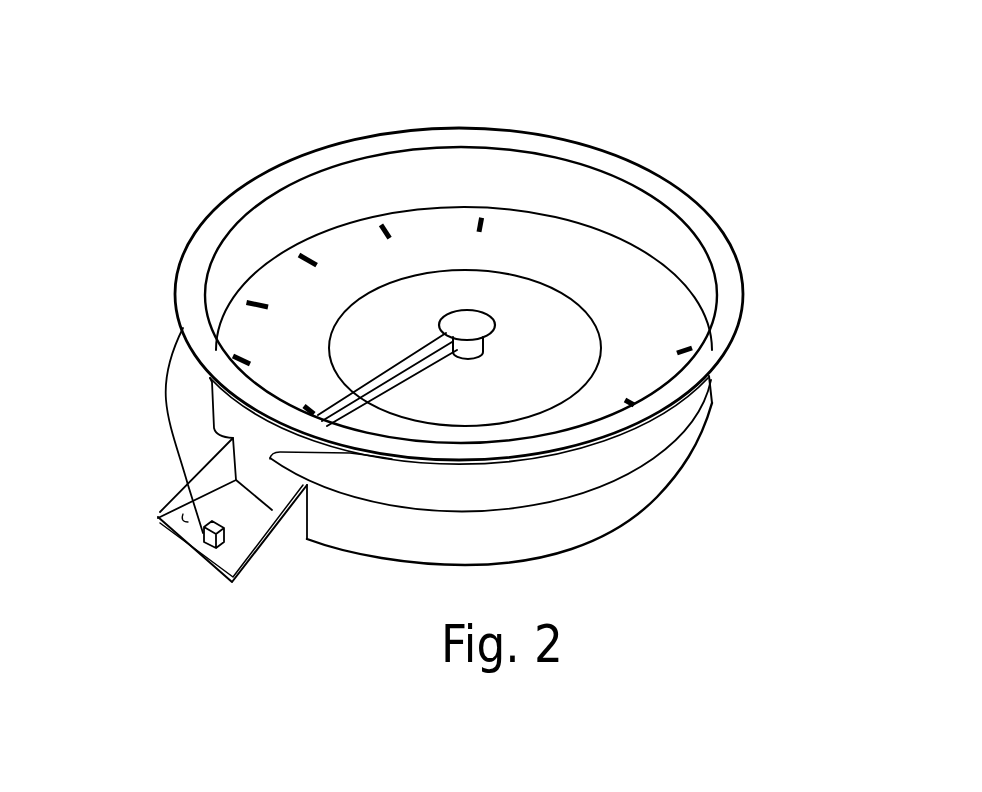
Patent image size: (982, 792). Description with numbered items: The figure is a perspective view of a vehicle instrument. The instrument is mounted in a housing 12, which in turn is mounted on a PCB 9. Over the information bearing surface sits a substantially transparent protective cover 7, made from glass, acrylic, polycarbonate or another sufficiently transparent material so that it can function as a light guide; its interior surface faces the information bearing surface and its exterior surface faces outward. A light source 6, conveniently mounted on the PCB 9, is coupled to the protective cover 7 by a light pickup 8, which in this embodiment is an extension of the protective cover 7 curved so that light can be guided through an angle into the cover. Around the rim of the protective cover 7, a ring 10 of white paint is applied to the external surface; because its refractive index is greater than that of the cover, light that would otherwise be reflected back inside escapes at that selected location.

The light source 6 is at (215, 549).
The protective cover 7 is at (573, 240).
The light pickup 8 is at (168, 379).
The PCB 9 is at (180, 510).
The ring of white paint 10 is at (732, 280).
The housing 12 is at (652, 492).